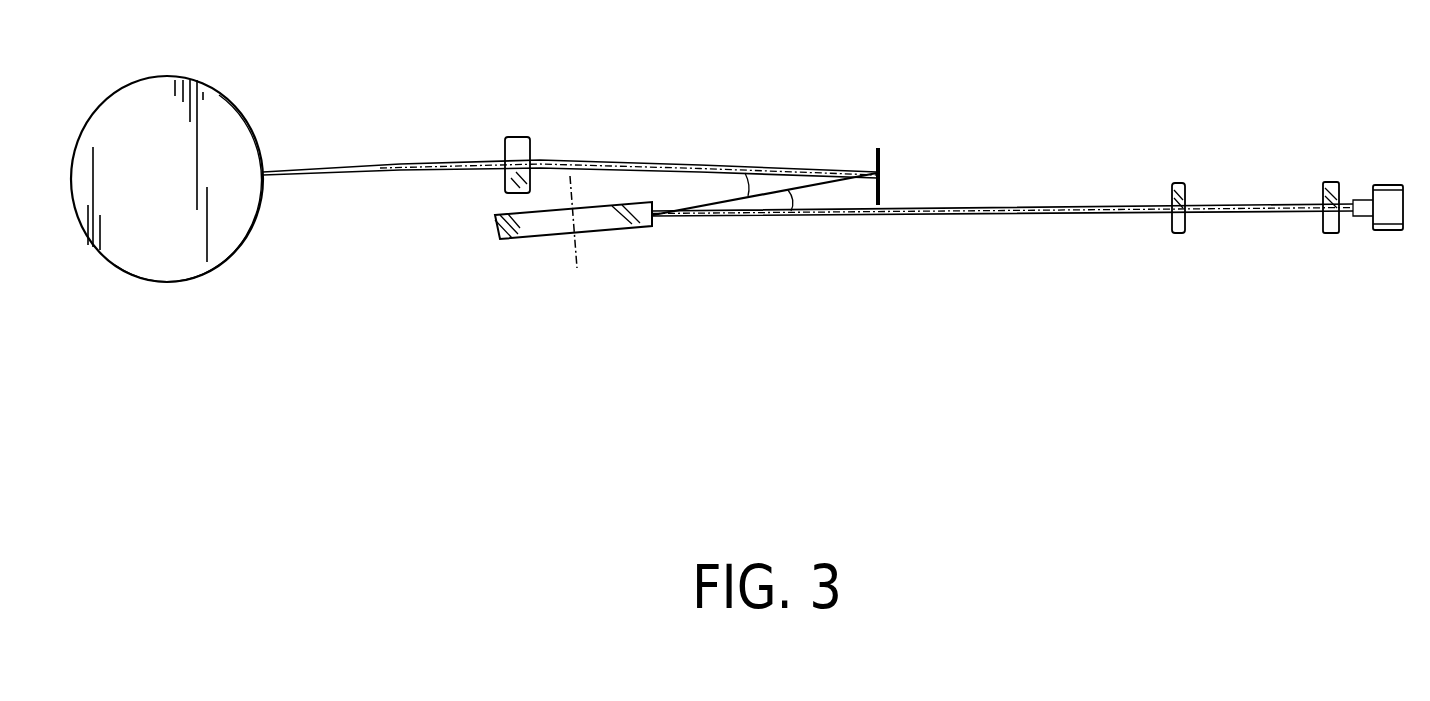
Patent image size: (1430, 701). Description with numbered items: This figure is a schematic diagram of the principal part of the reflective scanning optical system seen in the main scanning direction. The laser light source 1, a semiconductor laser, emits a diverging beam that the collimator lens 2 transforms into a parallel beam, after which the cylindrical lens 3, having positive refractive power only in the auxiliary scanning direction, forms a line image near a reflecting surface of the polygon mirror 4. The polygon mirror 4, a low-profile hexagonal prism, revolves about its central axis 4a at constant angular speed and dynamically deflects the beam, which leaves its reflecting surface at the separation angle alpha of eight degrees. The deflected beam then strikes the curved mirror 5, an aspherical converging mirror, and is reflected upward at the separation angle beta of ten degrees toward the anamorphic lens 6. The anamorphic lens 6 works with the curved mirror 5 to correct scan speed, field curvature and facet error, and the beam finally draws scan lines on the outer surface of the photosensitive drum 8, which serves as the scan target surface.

The laser light source 1 is at (1390, 185).
The collimator lens 2 is at (1322, 222).
The cylindrical lens 3 is at (1172, 198).
The polygon mirror 4 is at (530, 226).
The central axis 4a is at (578, 262).
The curved mirror 5 is at (880, 162).
The anamorphic lens 6 is at (517, 152).
The photosensitive drum 8 is at (162, 250).